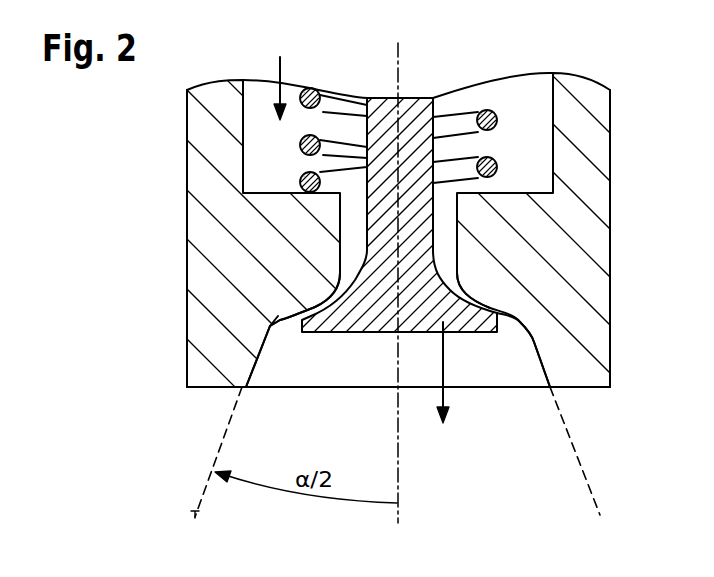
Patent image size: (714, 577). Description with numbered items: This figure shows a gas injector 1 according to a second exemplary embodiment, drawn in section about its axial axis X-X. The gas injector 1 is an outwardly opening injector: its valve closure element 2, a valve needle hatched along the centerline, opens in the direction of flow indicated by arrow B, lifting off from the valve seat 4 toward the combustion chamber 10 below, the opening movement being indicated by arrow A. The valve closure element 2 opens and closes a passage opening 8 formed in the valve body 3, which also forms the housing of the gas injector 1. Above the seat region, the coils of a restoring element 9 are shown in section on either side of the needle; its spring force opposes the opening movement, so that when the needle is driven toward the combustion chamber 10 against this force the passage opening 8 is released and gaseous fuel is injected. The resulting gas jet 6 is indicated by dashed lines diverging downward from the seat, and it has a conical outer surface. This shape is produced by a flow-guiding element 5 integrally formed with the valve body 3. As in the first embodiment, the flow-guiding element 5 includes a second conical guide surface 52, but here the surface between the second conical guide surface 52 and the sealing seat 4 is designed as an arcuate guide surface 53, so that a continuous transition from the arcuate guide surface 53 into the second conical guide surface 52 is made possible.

The gas injector 1 is at (118, 193).
The valve closure element 2 is at (422, 98).
The valve body 3 is at (222, 243).
The valve seat 4 is at (497, 296).
The flow-guiding element 5 is at (268, 342).
The gas jet 6 is at (193, 506).
The passage opening 8 is at (452, 256).
The restoring element 9 is at (300, 145).
The combustion chamber 10 is at (484, 484).
The second conical guide surface 52 is at (263, 377).
The arcuate guide surface 53 is at (270, 326).
The arrow A is at (447, 393).
The arrow B is at (290, 87).
The axial axis X- X is at (400, 288).